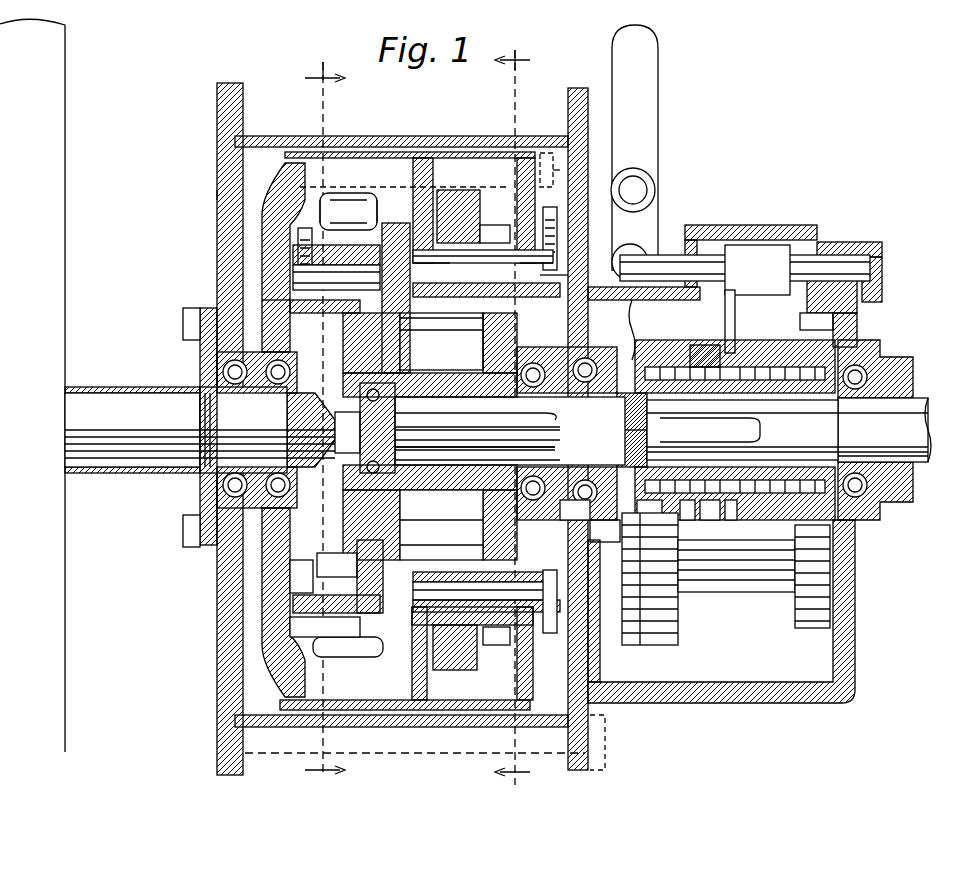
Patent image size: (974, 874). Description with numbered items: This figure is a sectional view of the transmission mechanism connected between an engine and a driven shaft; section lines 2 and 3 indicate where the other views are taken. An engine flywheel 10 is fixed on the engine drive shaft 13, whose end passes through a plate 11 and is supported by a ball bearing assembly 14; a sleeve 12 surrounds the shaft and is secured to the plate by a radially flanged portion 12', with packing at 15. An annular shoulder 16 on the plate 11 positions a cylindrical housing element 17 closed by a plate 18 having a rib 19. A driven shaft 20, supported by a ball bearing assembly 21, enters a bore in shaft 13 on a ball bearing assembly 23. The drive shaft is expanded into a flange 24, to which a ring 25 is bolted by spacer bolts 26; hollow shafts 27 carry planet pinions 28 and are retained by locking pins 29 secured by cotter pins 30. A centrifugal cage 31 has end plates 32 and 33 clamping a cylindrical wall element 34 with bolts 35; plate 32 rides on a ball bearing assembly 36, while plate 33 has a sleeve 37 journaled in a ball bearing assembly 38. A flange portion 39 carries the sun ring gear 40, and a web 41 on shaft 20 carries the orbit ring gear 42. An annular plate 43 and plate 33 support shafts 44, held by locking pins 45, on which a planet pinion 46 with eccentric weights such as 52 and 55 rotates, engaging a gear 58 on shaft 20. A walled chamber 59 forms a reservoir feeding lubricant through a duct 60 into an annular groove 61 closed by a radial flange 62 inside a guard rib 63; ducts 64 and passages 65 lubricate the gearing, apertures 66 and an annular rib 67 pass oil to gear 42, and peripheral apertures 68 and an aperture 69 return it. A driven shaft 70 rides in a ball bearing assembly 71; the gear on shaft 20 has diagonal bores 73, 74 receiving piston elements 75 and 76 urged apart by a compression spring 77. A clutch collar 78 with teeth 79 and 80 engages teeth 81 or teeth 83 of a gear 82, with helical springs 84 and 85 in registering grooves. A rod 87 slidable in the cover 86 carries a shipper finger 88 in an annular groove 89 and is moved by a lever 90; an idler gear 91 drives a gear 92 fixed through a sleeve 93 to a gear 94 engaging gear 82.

The engine flywheel 10 is at (52, 120).
The plate 11 is at (215, 190).
The sleeve 12 is at (132, 411).
The radially flanged portion 12' is at (226, 426).
The engine drive shaft 13 is at (105, 400).
The ball bearing assembly 14 is at (200, 485).
The packing 15 is at (205, 393).
The annular shoulder 16 is at (243, 88).
The cylindrical housing element 17 is at (318, 136).
The plate 18 is at (578, 88).
The rib 19 is at (590, 132).
The driven shaft 20 is at (540, 405).
The ball bearing assembly 21 is at (475, 431).
The section line 2 is at (514, 413).
The section line 3 is at (322, 422).
The ball bearing assembly 23 is at (405, 500).
The flange 24 is at (395, 545).
The ring 25 is at (310, 590).
The spacer bolts 26 is at (285, 650).
The hollow shafts 27 is at (336, 283).
The planet pinions 28 is at (270, 298).
The locking pins 29 is at (298, 232).
The cotter pins 30 is at (335, 279).
The centrifugal cage 31 is at (480, 185).
The end plate 32 is at (280, 195).
The end plate 33 is at (560, 170).
The cylindrical peripheral wall element 34 is at (370, 152).
The bolts 35 is at (545, 150).
The ball bearing assembly 36 is at (285, 406).
The sleeve 37 is at (637, 330).
The ball bearing assembly 38 is at (567, 438).
The flange portion 39 is at (300, 400).
The ring gear 40 is at (413, 372).
The web 41 is at (441, 342).
The ring gear 42 is at (350, 193).
The annular plate 43 is at (425, 158).
The shafts 44 is at (565, 270).
The locking pins 45 is at (557, 225).
The planet pinion 46 is at (490, 225).
The eccentric weight 52 is at (455, 190).
The eccentric weight 55 is at (472, 653).
The gear 58 is at (445, 500).
The walled chamber 59 is at (782, 675).
The duct 60 is at (598, 543).
The annular groove 61 is at (598, 302).
The radial flange 62 is at (530, 269).
The guard rib 63 is at (590, 285).
The ducts 64 is at (486, 273).
The passages 65 is at (469, 335).
The apertures 66 is at (398, 318).
The annular rib 67 is at (434, 269).
The peripheral apertures 68 is at (312, 712).
The aperture 69 is at (600, 668).
The driven shaft 70 is at (905, 415).
The ball bearing assembly 71 is at (895, 357).
The diagonal bore 73 is at (655, 340).
The diagonal bore 74 is at (650, 509).
The piston element 75 is at (618, 410).
The piston element 76 is at (618, 436).
The compression spring 77 is at (742, 430).
The clutch collar 78 is at (735, 340).
The teeth 79 is at (712, 520).
The teeth 80 is at (775, 520).
The teeth 81 is at (685, 520).
The gear 82 is at (857, 325).
The teeth 83 is at (816, 321).
The helical spring 84 is at (705, 345).
The helical spring 85 is at (862, 365).
The cover 86 is at (780, 225).
The rod 87 is at (822, 265).
The shipper finger 88 is at (740, 245).
The annular groove 89 is at (731, 520).
The lever 90 is at (658, 112).
The idler gear 91 is at (628, 600).
The gear 92 is at (678, 590).
The sleeve 93 is at (760, 575).
The gear 94 is at (795, 615).